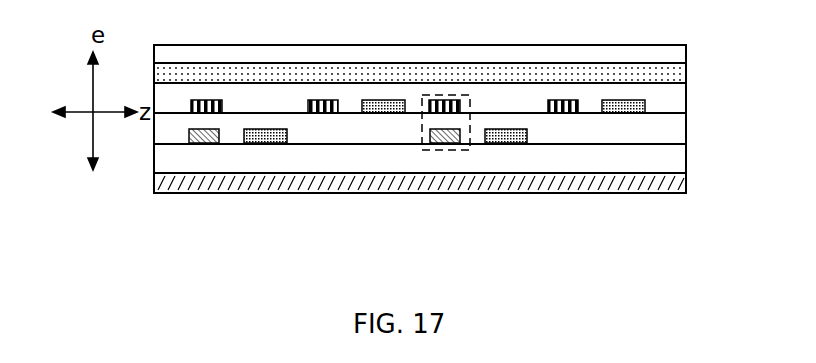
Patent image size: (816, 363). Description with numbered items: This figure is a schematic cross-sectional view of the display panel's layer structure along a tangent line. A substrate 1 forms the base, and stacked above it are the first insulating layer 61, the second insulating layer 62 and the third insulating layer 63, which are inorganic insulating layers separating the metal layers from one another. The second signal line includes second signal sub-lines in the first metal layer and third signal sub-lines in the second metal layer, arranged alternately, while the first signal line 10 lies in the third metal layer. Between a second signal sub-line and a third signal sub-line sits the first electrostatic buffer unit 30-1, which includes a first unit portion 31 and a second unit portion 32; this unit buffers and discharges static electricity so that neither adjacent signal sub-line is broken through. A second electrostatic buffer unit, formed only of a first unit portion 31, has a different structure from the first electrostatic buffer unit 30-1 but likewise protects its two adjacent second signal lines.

The substrate 1 is at (660, 185).
The first signal line 10 is at (530, 76).
The first insulating layer 61 is at (650, 157).
The second insulating layer 62 is at (650, 128).
The third insulating layer 63 is at (650, 98).
The first unit portion 31 is at (449, 109).
The second unit portion 32 is at (452, 140).
The first electrostatic buffer unit 30-1 is at (430, 150).